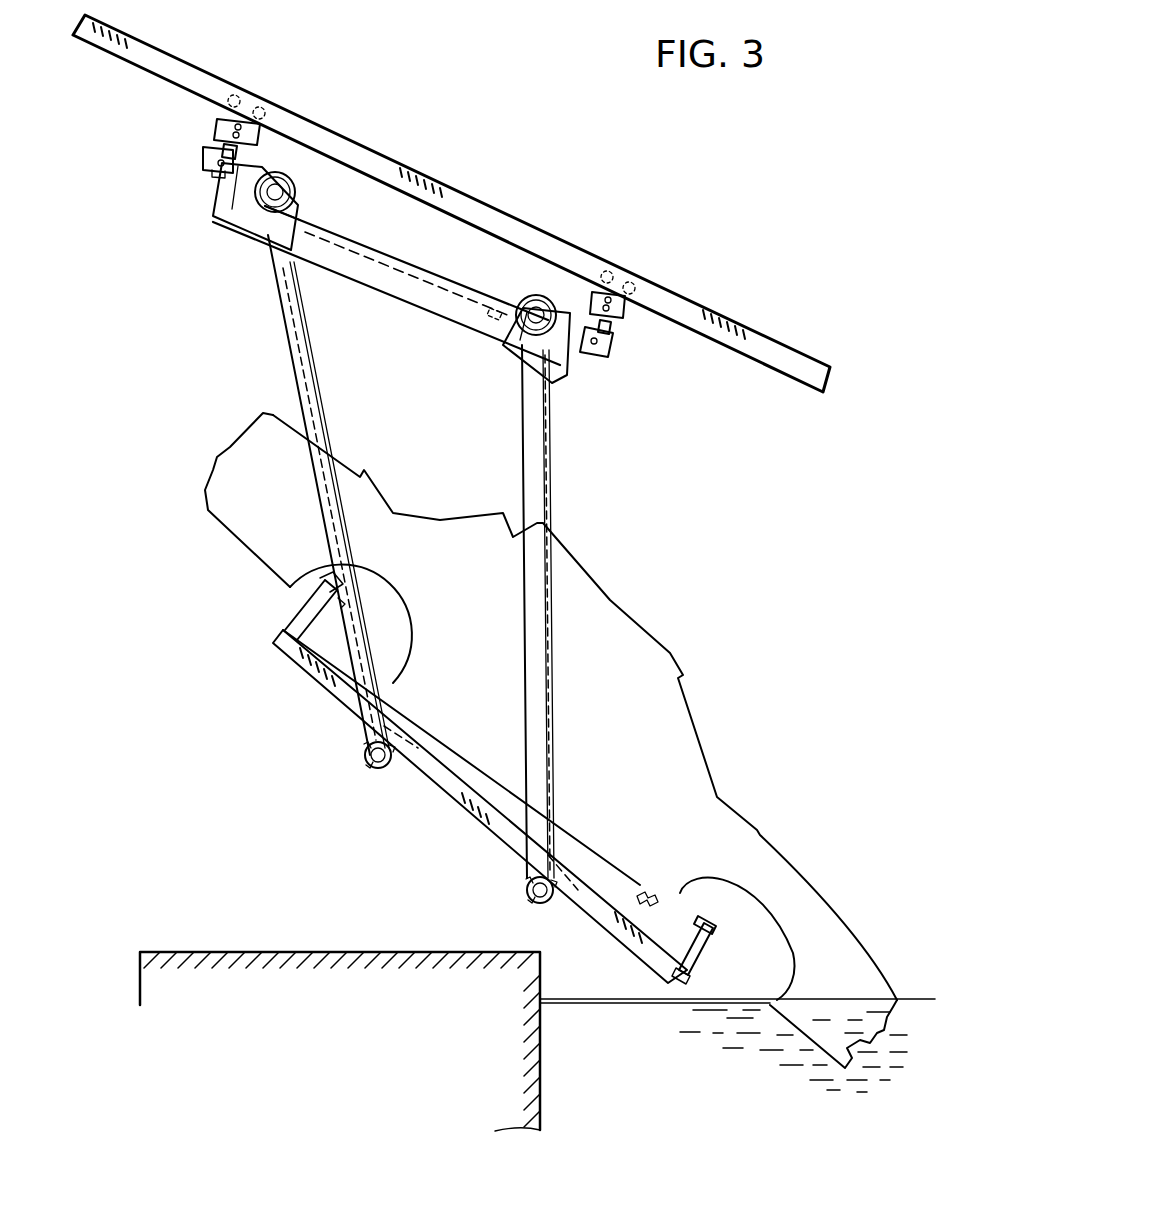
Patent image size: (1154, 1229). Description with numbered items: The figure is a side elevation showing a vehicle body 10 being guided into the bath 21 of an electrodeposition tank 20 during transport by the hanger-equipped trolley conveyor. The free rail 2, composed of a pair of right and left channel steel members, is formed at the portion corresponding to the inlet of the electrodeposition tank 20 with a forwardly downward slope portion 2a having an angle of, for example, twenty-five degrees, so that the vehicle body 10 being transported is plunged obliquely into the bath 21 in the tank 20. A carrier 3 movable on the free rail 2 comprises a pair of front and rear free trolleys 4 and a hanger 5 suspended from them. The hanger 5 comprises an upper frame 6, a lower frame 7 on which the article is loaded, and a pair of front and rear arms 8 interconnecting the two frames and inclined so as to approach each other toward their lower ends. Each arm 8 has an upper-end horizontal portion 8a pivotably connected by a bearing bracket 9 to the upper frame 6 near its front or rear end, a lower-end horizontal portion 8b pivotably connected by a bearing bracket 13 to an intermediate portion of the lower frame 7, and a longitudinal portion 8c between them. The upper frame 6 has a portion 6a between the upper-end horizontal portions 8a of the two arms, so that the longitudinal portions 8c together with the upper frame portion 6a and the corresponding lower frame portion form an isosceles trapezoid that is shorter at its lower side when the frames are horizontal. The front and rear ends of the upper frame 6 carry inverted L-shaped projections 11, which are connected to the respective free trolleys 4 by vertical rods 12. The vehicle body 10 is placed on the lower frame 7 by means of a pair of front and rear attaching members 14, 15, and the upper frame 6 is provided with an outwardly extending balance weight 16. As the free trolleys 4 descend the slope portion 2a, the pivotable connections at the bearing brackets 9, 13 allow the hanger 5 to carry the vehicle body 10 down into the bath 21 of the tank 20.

The free rail 2 is at (783, 349).
The forwardly downward slope portion 2a is at (442, 190).
The carrier 3 is at (628, 472).
The free trolley 4 is at (222, 120).
The hanger 5 is at (296, 350).
The upper frame 6 is at (392, 294).
The upper frame portion 6a is at (343, 272).
The lower frame 7 is at (462, 795).
The arm 8 is at (322, 435).
The upper-end horizontal portion 8a is at (250, 231).
The lower-end horizontal portion 8b is at (381, 764).
The longitudinal portion 8c is at (333, 503).
The bearing bracket 9 is at (293, 183).
The vehicle body 10 is at (670, 650).
The inverted L-shaped projection 11 is at (204, 159).
The vertical rod 12 is at (220, 137).
The bearing bracket 13 is at (361, 748).
The attaching member 14 is at (688, 948).
The attaching member 15 is at (303, 613).
The balance weight 16 is at (460, 300).
The electrodeposition tank 20 is at (432, 950).
The bath 21 is at (900, 1000).